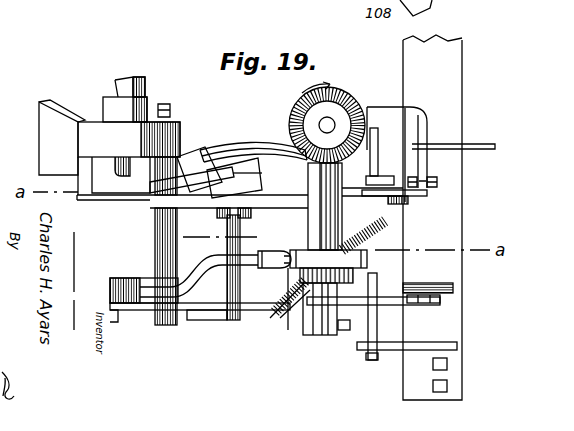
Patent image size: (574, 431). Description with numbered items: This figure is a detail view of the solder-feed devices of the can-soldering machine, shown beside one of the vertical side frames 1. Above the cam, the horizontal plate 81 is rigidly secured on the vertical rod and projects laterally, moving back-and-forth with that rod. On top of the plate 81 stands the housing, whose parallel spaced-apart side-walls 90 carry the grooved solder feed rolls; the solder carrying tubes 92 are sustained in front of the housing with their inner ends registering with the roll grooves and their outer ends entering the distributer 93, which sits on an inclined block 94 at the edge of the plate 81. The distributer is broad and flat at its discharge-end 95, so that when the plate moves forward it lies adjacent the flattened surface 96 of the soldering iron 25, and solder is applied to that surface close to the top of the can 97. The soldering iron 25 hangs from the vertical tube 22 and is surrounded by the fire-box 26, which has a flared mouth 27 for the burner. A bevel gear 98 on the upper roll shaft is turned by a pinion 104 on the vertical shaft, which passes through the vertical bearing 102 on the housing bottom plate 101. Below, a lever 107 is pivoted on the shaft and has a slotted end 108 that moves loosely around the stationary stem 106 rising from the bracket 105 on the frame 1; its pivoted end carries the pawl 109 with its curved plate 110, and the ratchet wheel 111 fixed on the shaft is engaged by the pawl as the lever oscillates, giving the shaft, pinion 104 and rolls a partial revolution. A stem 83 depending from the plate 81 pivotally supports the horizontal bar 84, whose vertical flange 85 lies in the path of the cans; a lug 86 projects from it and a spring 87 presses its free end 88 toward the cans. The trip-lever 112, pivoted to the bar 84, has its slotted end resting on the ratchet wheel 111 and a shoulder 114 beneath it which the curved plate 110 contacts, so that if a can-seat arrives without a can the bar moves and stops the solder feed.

The side frame 1 is at (432, 217).
The vertical tube 22 is at (130, 80).
The soldering iron 25 is at (108, 187).
The fire-box 26 is at (168, 122).
The flared mouth 27 is at (52, 100).
The horizontal plate 81 is at (188, 208).
The stem 83 is at (223, 292).
The horizontal bar 84 is at (188, 312).
The vertical flange 85 is at (140, 283).
The lug 86 is at (280, 312).
The spring 87 is at (288, 332).
The free end 88 is at (112, 310).
The side-wall 90 is at (407, 110).
The solder carrying tube 92 is at (255, 147).
The distributer 93 is at (190, 158).
The inclined block 94 is at (248, 186).
The discharge-end 95 is at (166, 187).
The flattened surface 96 is at (150, 168).
The can 97 is at (153, 312).
The bevel gear 98 is at (340, 94).
The bottom plate 101 is at (410, 194).
The vertical bearing 102 is at (330, 183).
The pinion 104 is at (330, 160).
The bracket 105 is at (432, 348).
The stationary stem 106 is at (372, 332).
The lever 107 is at (360, 306).
The slotted end 108 is at (410, 306).
The pawl 109 is at (352, 283).
The curved plate 110 is at (286, 318).
The ratchet wheel 111 is at (320, 292).
The trip-lever 112 is at (244, 262).
The shoulder 114 is at (328, 259).